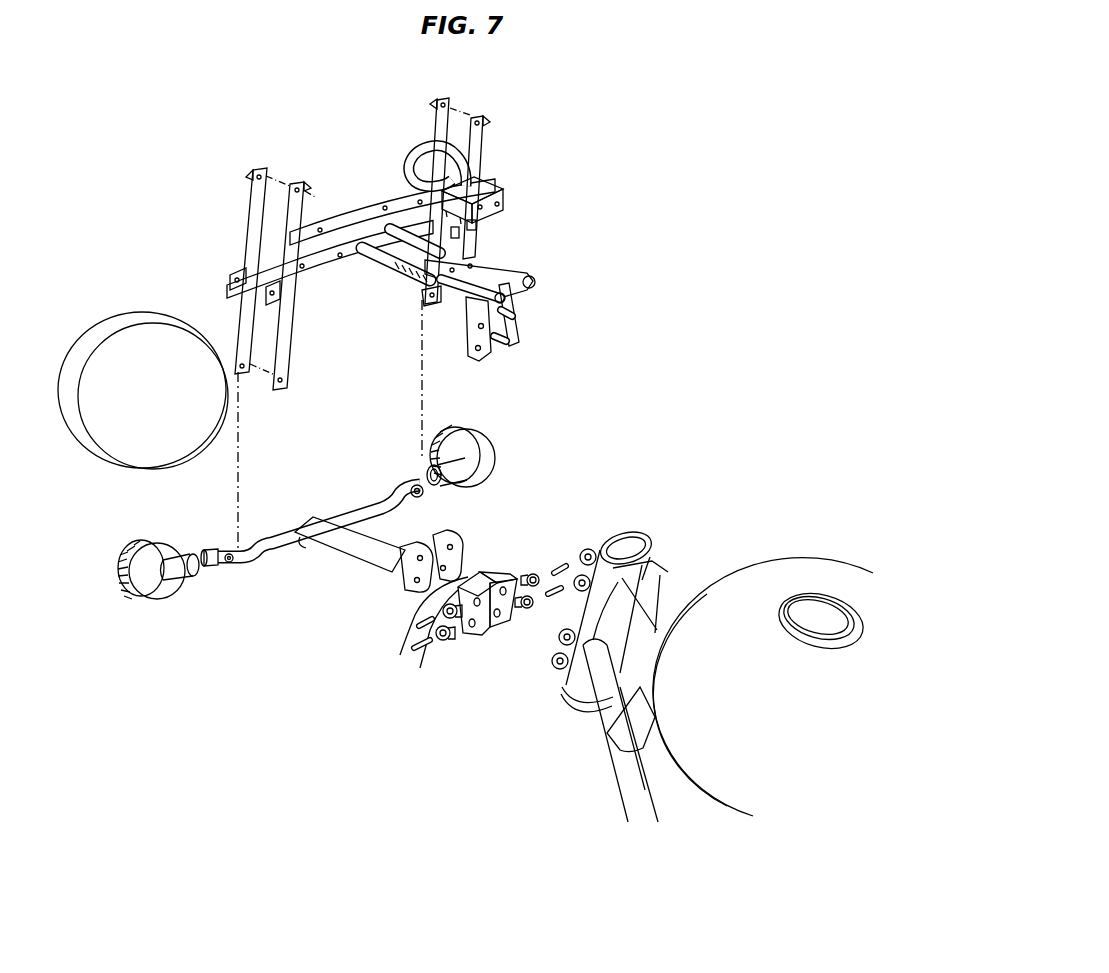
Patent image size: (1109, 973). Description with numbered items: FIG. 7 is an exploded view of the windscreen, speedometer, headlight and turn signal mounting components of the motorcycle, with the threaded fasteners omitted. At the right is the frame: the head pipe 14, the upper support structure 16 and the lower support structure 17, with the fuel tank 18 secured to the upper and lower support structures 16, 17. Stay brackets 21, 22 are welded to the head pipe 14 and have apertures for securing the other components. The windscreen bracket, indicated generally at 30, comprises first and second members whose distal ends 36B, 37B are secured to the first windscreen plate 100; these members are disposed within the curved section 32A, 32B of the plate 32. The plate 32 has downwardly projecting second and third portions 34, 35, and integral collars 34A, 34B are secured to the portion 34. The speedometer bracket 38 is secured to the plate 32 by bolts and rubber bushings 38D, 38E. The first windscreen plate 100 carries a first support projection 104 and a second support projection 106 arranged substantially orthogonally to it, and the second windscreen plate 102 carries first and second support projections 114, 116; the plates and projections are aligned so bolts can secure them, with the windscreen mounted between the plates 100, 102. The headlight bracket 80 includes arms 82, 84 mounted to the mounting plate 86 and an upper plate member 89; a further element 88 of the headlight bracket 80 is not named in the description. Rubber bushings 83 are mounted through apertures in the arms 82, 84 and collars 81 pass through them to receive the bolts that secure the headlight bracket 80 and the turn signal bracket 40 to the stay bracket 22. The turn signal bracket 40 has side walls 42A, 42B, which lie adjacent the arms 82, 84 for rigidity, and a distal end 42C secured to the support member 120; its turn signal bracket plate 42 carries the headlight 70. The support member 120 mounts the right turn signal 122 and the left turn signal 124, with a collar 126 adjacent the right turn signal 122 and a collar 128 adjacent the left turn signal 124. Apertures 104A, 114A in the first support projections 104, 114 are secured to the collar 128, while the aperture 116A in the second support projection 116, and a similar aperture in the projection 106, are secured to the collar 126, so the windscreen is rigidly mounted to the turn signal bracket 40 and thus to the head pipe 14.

The head pipe 14 is at (617, 665).
The upper support structure 16 is at (660, 595).
The lower support structure 17 is at (626, 795).
The fuel tank 18 is at (763, 687).
The stay bracket 21 is at (585, 549).
The stay bracket 22 is at (556, 649).
The seat support assembly 30 is at (394, 306).
The plate 32 is at (482, 308).
The curved section 32A is at (531, 280).
The curved section 32B is at (482, 300).
The downwardly projecting second portion 34 is at (547, 327).
The integral collar 34A is at (515, 314).
The integral collar 34B is at (507, 343).
The downwardly projecting third portion 35 is at (472, 330).
The distal end of first member 36B is at (390, 226).
The distal end of second member 37B is at (363, 243).
The speedometer bracket 38 is at (503, 202).
The rubber bushing 38D is at (477, 226).
The rubber bushing 38E is at (460, 234).
The turn signal bracket 40 is at (330, 536).
The turn signal bracket plate 42 is at (386, 551).
The side wall 42A is at (412, 580).
The side wall 42B is at (448, 553).
The distal end 42C is at (316, 520).
The headlight 70 is at (124, 303).
The headlight bracket 80 is at (465, 606).
The collar 81 is at (421, 640).
The arm 82 is at (509, 581).
The rubber bushing 83 is at (438, 638).
The arm 84 is at (452, 640).
The mounting plate 86 is at (440, 614).
The bracket block 88 is at (470, 640).
The upper plate member 89 is at (506, 576).
The first windscreen plate 100 is at (316, 275).
The second windscreen plate 102 is at (321, 228).
The first support projection 104 is at (319, 302).
The aperture 104A is at (282, 380).
The second support projection 106 is at (480, 139).
The first support projection 114 is at (234, 247).
The aperture 114A is at (240, 352).
The second support projection 116 is at (423, 201).
The aperture 116A is at (430, 300).
The support member 120 is at (359, 510).
The right turn signal 122 is at (490, 455).
The left turn signal 124 is at (151, 592).
The collar 126 is at (424, 497).
The collar 128 is at (229, 563).